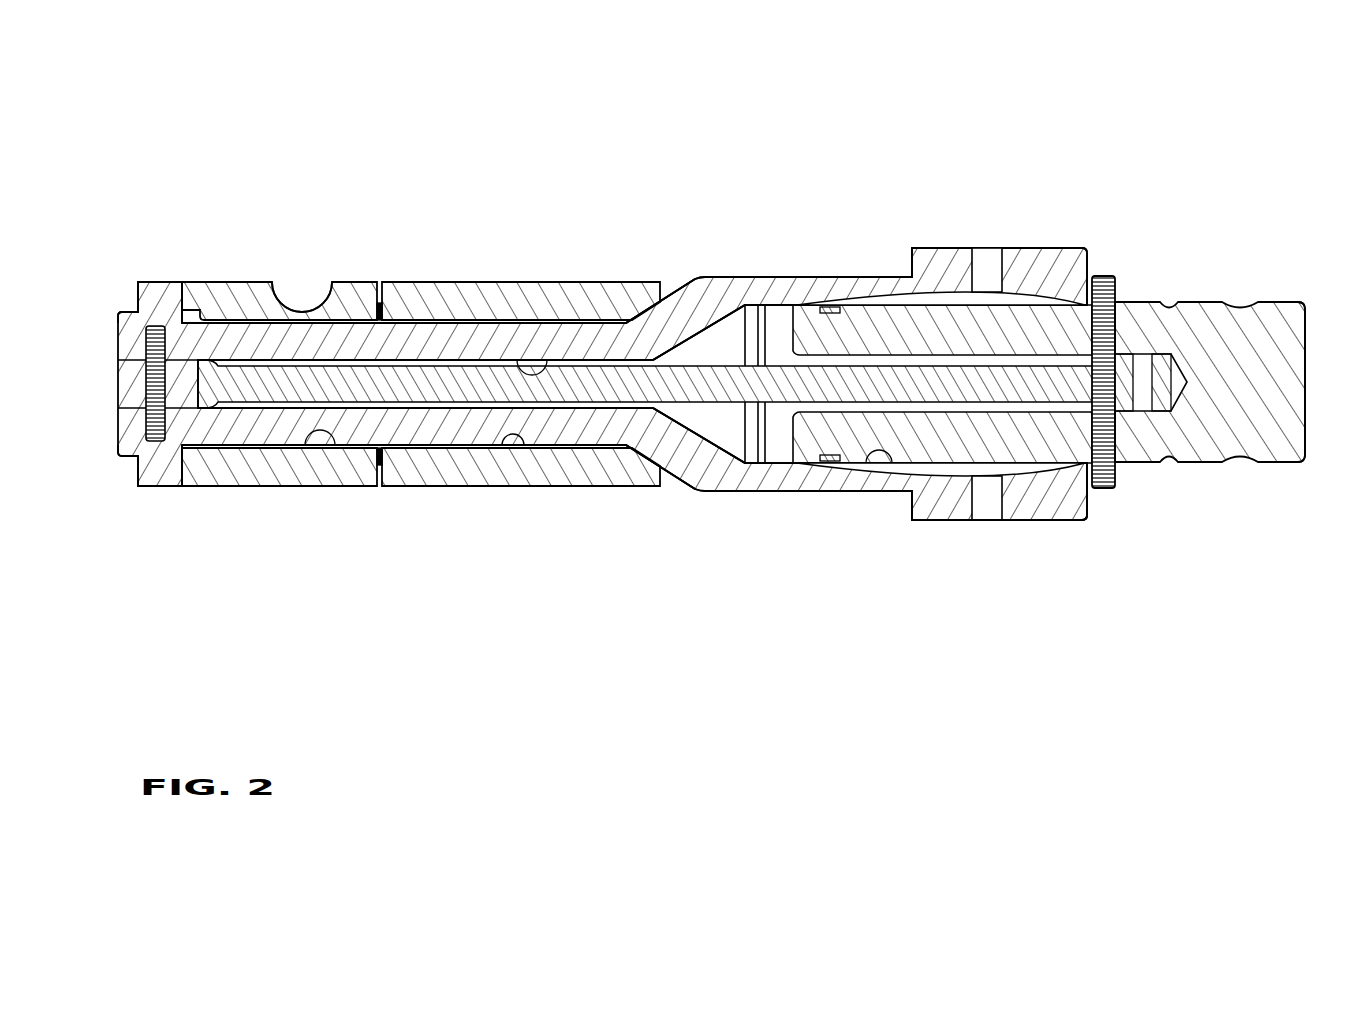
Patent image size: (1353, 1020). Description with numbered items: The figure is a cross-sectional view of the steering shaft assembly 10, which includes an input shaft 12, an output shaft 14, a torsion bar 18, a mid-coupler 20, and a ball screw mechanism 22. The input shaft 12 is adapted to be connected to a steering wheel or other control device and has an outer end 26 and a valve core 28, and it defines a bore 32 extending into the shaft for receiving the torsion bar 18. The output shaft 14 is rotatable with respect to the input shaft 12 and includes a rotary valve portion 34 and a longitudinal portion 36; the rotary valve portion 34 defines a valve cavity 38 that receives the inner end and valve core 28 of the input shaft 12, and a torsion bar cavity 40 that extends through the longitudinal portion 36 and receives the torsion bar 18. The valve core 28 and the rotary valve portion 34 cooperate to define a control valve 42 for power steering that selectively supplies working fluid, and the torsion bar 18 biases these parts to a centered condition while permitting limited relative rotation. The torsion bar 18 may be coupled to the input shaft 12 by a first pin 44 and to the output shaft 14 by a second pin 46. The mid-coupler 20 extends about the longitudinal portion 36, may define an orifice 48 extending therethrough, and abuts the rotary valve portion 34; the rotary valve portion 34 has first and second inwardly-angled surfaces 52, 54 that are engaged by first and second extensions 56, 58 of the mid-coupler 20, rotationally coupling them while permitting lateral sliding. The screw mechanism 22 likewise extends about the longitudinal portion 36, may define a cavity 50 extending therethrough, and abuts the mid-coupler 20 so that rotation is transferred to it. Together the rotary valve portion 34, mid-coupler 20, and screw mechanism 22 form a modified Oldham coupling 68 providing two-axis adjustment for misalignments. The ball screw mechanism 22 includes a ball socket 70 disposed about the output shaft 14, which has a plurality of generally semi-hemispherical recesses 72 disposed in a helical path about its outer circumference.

The steering shaft assembly 10 is at (1112, 163).
The input shaft 12 is at (1207, 285).
The output shaft 14 is at (745, 505).
The torsion bar 18 is at (990, 385).
The mid-coupler 20 is at (441, 258).
The ball screw mechanism 22 is at (296, 262).
The outer end 26 is at (1306, 396).
The valve core 28 is at (1017, 468).
The bore 32 is at (1087, 512).
The rotary valve portion 34 is at (885, 505).
The longitudinal portion 36 is at (428, 468).
The valve cavity 38 is at (860, 468).
The torsion bar cavity 40 is at (548, 358).
The control valve 42 is at (677, 207).
The first pin 44 is at (1108, 275).
The second pin 46 is at (160, 340).
The orifice 48 is at (496, 442).
The cavity 50 is at (302, 440).
The first inwardly-angled surface 52 is at (690, 300).
The second inwardly-angled surface 54 is at (678, 468).
The first extension 56 is at (655, 300).
The second extension 58 is at (646, 458).
The modified Oldham coupling 68 is at (662, 172).
The ball socket 70 is at (233, 476).
The recesses 72 is at (282, 282).